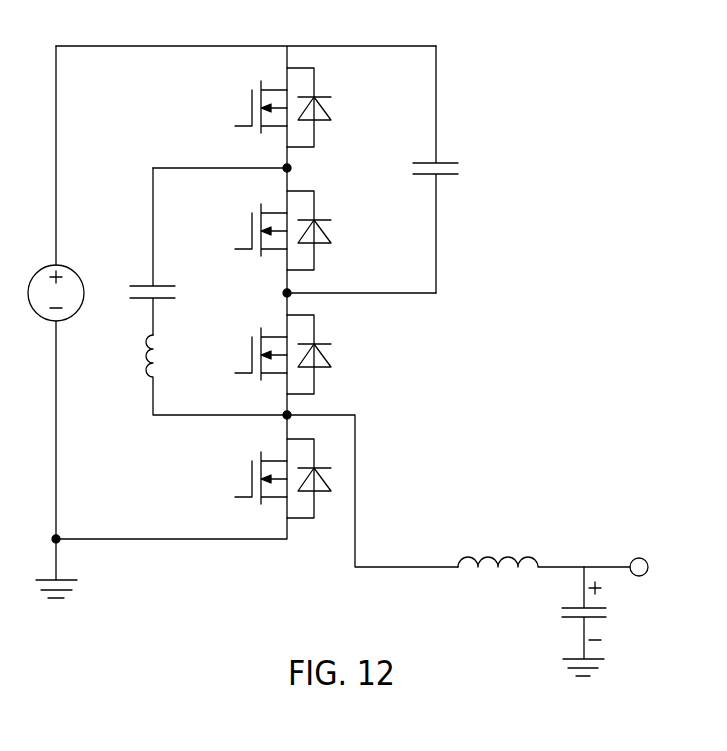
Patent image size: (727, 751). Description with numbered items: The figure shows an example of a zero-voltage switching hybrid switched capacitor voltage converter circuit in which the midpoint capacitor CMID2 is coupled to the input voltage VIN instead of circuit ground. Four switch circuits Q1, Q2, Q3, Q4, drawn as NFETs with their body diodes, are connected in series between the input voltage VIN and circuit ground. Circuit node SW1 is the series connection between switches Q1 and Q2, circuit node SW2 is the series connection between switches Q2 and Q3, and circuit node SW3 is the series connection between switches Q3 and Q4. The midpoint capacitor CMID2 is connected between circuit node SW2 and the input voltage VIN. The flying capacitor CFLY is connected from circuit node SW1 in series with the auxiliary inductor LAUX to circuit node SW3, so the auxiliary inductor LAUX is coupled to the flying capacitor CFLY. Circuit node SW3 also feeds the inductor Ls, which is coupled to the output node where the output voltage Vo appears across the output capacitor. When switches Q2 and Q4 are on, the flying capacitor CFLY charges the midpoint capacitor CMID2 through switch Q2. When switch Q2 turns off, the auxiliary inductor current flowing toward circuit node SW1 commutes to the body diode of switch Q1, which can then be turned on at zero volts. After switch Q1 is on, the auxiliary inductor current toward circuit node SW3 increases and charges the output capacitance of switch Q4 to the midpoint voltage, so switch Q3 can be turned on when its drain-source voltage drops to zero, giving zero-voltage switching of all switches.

The input voltage VIN is at (54, 322).
The first switch circuit Q1 is at (277, 107).
The second switch circuit Q2 is at (277, 230).
The third switch circuit Q3 is at (277, 354).
The fourth switch circuit Q4 is at (277, 478).
The first circuit node SW1 is at (243, 177).
The second circuit node SW2 is at (338, 296).
The third circuit node SW3 is at (372, 479).
The midpoint capacitor CMID2 is at (455, 169).
The flying capacitor CFLY is at (140, 251).
The auxiliary inductor LAUX is at (187, 373).
The inductor Ls is at (553, 551).
The output voltage Vo is at (601, 621).